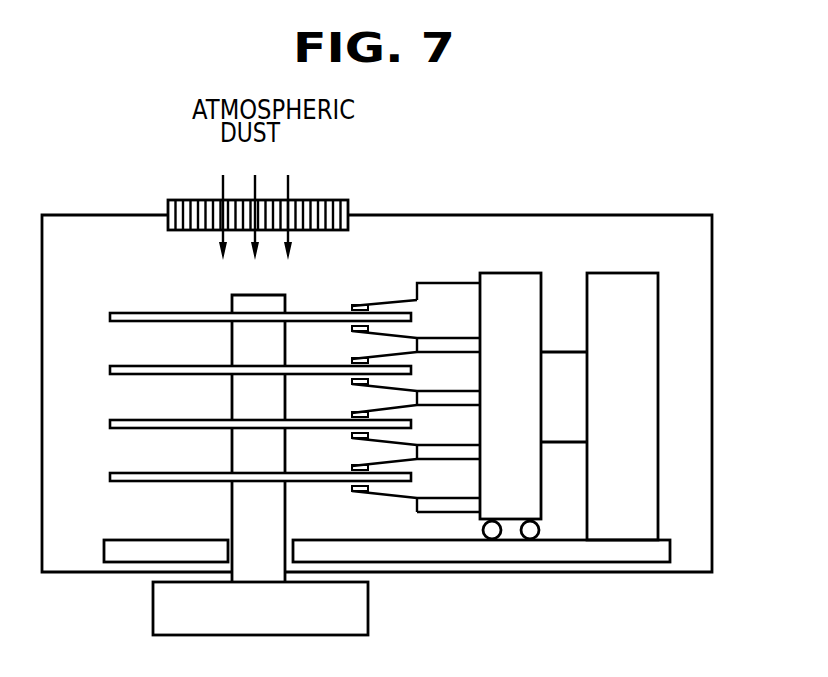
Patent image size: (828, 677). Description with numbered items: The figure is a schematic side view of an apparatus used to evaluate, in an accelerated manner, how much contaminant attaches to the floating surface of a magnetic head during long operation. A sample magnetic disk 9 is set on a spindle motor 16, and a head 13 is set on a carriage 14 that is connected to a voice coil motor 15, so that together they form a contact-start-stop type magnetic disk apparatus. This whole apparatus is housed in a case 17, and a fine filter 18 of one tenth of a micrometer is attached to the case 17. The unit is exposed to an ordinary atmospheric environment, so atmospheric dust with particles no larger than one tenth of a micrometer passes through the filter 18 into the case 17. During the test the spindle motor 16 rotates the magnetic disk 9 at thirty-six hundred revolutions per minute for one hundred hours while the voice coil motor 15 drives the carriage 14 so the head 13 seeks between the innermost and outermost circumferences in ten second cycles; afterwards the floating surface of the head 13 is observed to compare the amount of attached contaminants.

The magnetic disk 9 is at (141, 313).
The head 13 is at (356, 305).
The carriage 14 is at (506, 273).
The voice coil motor 15 is at (618, 273).
The spindle motor 16 is at (368, 609).
The case 17 is at (655, 215).
The filter 18 is at (347, 200).